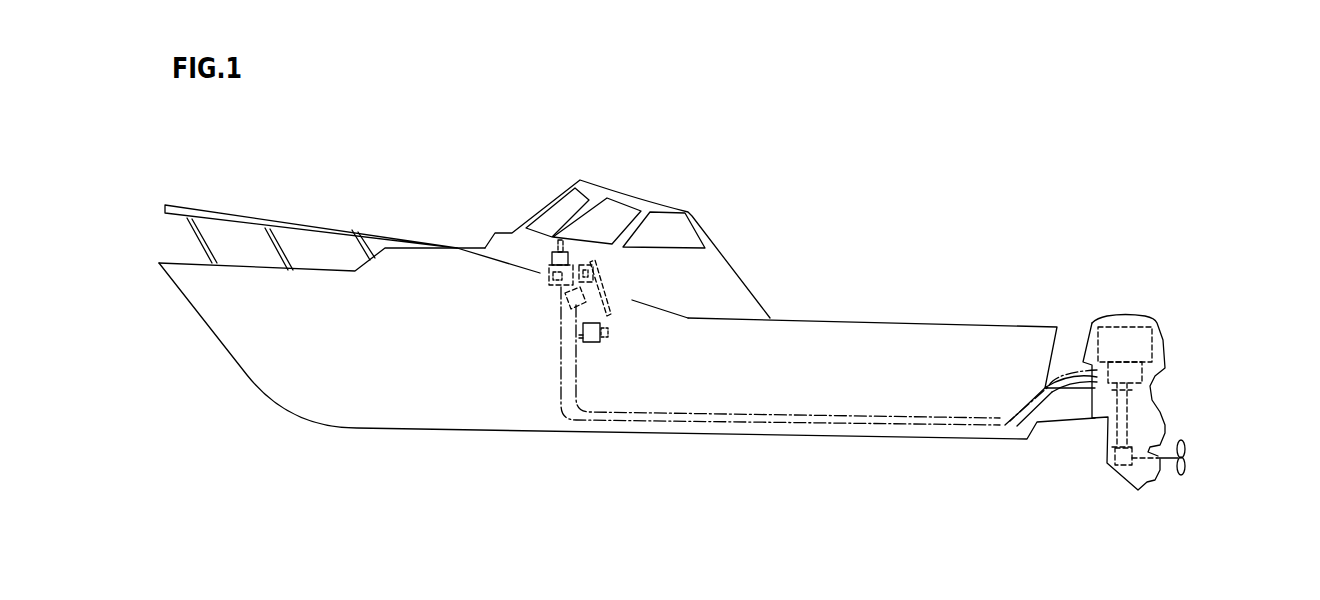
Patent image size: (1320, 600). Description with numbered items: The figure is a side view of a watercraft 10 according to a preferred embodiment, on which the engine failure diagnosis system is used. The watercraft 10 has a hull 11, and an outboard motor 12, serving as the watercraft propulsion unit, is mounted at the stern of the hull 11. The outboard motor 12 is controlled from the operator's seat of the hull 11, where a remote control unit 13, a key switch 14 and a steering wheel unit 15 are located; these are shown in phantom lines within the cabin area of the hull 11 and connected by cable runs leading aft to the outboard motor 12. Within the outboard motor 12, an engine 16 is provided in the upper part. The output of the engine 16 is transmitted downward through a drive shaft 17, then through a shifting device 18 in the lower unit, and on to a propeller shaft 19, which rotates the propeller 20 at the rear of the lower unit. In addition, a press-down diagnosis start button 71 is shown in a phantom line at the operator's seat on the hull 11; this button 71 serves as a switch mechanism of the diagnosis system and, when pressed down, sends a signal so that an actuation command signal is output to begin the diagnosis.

The watercraft 10 is at (363, 182).
The hull 11 is at (905, 326).
The outboard motor 12 is at (1131, 288).
The remote control unit 13 is at (578, 260).
The key switch 14 is at (594, 270).
The steering wheel unit 15 is at (600, 303).
The engine 16 is at (1163, 333).
The drive shaft 17 is at (1132, 398).
The shifting device 18 is at (1120, 478).
The propeller shaft 19 is at (1167, 462).
The propeller 20 is at (1186, 448).
The diagnosis start button 71 is at (608, 333).